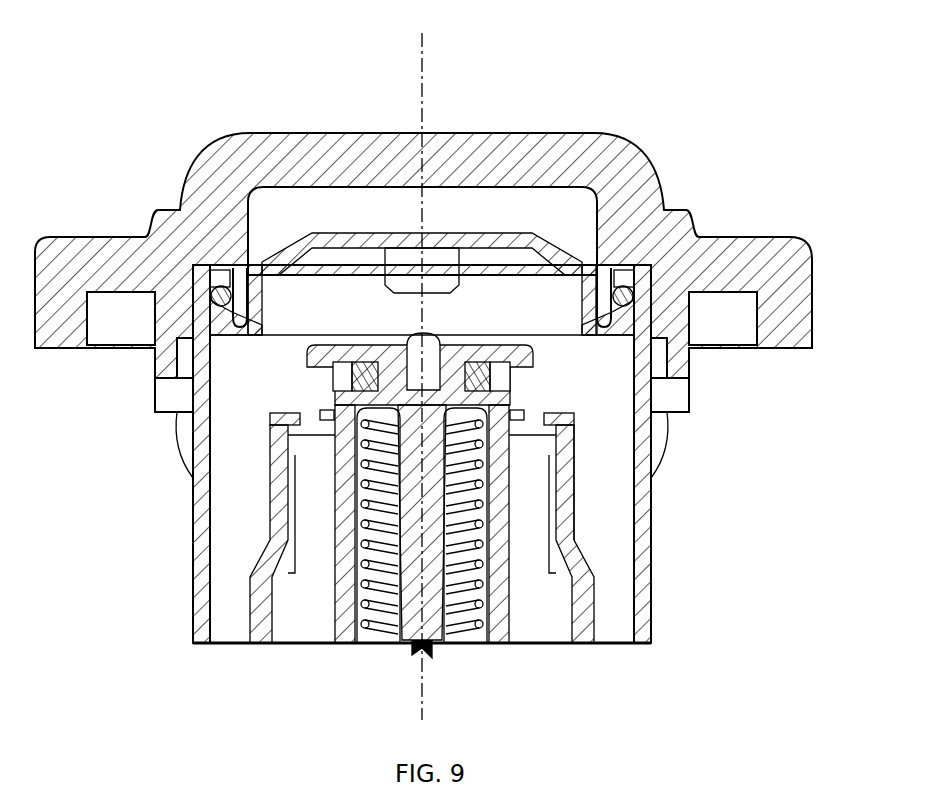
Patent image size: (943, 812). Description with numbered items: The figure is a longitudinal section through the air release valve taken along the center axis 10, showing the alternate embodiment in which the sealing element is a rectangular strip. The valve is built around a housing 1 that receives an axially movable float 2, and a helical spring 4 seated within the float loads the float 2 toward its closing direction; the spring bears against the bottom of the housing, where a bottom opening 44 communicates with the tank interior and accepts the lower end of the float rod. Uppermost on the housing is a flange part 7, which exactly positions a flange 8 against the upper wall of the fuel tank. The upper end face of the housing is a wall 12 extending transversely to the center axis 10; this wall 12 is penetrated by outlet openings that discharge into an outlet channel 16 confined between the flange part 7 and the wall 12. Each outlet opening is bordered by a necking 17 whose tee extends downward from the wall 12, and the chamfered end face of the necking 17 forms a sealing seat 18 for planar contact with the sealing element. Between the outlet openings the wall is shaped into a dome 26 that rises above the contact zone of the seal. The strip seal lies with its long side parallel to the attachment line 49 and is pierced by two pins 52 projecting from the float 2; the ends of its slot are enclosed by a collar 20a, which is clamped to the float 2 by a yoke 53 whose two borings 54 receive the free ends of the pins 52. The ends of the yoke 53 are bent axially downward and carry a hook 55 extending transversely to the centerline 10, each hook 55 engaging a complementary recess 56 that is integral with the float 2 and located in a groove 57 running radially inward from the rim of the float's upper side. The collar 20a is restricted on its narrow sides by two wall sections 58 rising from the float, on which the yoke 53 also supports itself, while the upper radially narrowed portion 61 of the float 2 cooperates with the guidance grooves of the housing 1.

The housing 1 is at (668, 458).
The float 2 is at (585, 597).
The helical spring 4 is at (387, 620).
The flange part 7 is at (235, 163).
The flange 8 is at (788, 258).
The center axis 10 is at (424, 62).
The wall 12 is at (372, 262).
The outlet channel 16 is at (322, 208).
The necking 17 is at (340, 350).
The sealing seat 18 is at (437, 352).
The collar 20a is at (548, 424).
The dome 26 is at (490, 240).
The bottom opening 44 is at (500, 642).
The attachment line 49 is at (410, 620).
The pins 52 is at (455, 352).
The yoke 53 is at (545, 362).
The borings 54 is at (545, 268).
The hook 55 is at (335, 440).
The recess 56 is at (330, 385).
The groove 57 is at (285, 405).
The wall sections 58 is at (247, 227).
The radially narrowed portion 61 is at (577, 490).